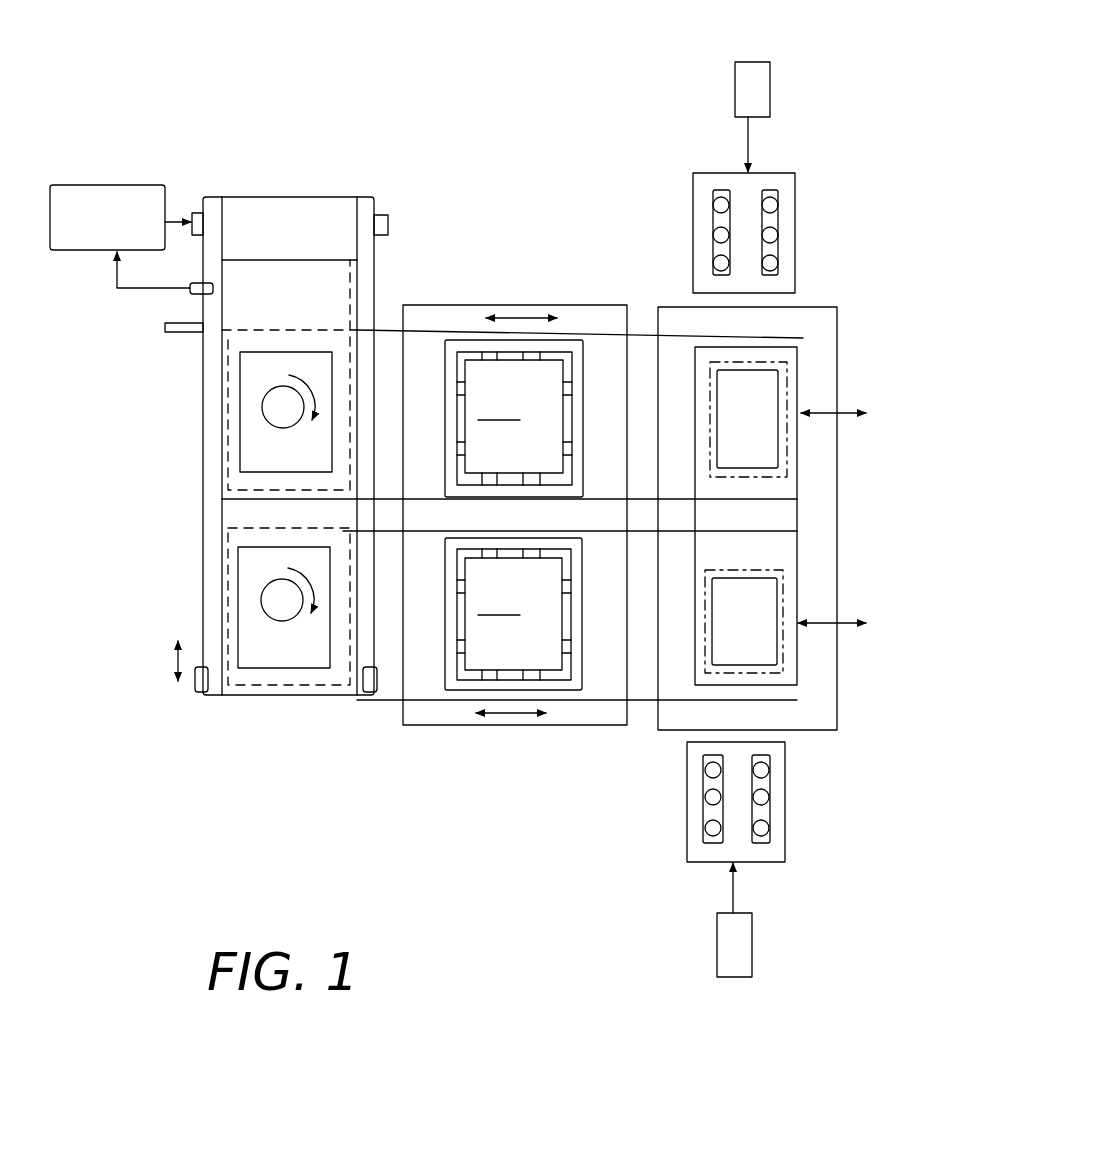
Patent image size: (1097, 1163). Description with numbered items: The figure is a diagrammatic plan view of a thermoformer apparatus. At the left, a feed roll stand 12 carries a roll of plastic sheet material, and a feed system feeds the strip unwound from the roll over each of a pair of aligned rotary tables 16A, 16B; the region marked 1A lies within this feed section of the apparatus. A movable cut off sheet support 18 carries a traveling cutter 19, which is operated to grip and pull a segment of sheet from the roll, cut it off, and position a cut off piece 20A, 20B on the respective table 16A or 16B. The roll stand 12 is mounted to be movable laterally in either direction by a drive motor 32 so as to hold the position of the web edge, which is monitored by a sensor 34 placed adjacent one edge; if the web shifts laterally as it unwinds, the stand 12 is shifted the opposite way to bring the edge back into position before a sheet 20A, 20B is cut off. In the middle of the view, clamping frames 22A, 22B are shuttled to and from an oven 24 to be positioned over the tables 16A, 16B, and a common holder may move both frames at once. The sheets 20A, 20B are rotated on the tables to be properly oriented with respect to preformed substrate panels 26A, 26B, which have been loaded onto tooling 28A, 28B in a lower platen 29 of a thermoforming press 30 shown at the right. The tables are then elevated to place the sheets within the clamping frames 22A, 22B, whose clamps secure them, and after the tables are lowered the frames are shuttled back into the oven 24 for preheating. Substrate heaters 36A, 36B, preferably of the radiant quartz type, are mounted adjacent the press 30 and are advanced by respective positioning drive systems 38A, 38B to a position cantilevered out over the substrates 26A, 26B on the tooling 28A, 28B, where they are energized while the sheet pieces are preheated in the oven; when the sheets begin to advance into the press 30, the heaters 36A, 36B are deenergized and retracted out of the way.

The main body 1A is at (358, 292).
The feed roll stand 12 is at (232, 178).
The rotary table 16A is at (237, 450).
The rotary table 16B is at (236, 575).
The movable cut off sheet support 18 is at (221, 402).
The traveling cutter 19 is at (187, 333).
The cut off piece 20A is at (258, 328).
The cut off piece 20B is at (262, 696).
The clamping frame 22A is at (443, 364).
The clamping frame 22B is at (443, 683).
The oven 24 is at (492, 727).
The preformed substrate panel 26A is at (774, 390).
The preformed substrate panel 26B is at (747, 654).
The tooling 28A is at (788, 451).
The tooling 28B is at (788, 653).
The lower platen 29 is at (801, 523).
The thermoforming press 30 is at (856, 345).
The drive motor 32 is at (113, 183).
The sensor 34 is at (188, 290).
The substrate heater 36A is at (692, 176).
The substrate heater 36B is at (686, 825).
The positioning drive system 38A is at (738, 65).
The positioning drive system 38B is at (716, 948).